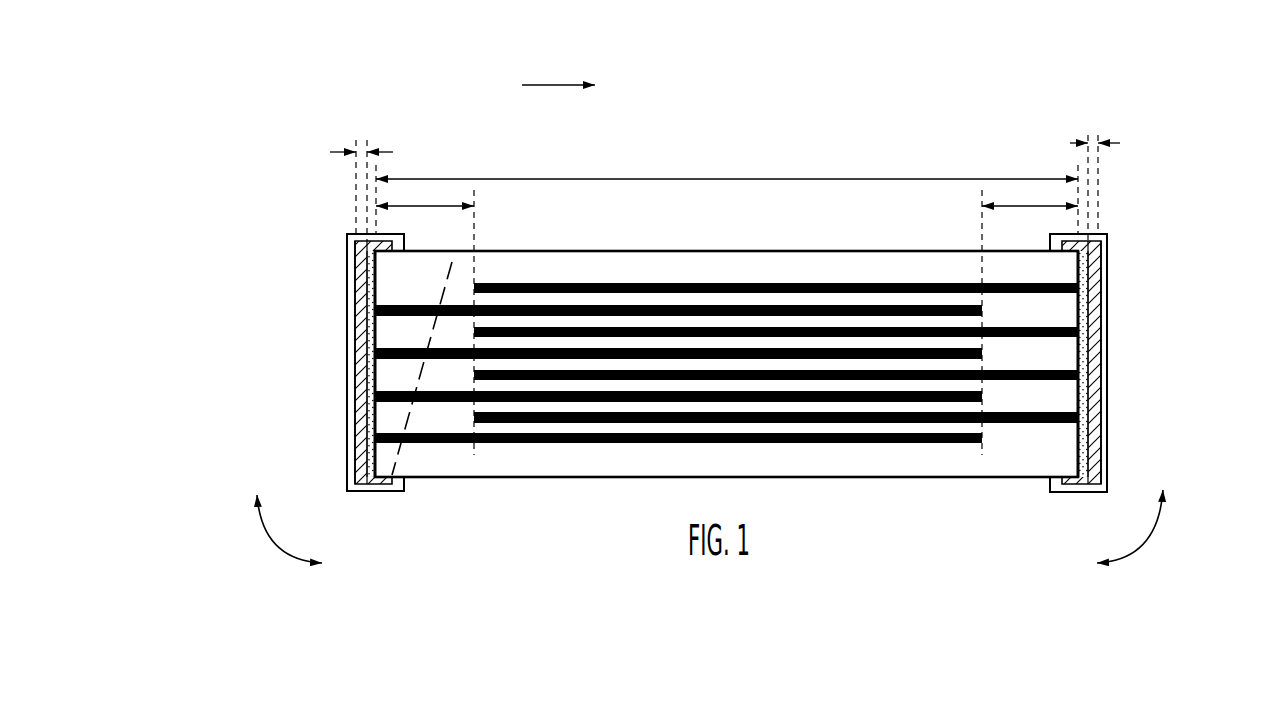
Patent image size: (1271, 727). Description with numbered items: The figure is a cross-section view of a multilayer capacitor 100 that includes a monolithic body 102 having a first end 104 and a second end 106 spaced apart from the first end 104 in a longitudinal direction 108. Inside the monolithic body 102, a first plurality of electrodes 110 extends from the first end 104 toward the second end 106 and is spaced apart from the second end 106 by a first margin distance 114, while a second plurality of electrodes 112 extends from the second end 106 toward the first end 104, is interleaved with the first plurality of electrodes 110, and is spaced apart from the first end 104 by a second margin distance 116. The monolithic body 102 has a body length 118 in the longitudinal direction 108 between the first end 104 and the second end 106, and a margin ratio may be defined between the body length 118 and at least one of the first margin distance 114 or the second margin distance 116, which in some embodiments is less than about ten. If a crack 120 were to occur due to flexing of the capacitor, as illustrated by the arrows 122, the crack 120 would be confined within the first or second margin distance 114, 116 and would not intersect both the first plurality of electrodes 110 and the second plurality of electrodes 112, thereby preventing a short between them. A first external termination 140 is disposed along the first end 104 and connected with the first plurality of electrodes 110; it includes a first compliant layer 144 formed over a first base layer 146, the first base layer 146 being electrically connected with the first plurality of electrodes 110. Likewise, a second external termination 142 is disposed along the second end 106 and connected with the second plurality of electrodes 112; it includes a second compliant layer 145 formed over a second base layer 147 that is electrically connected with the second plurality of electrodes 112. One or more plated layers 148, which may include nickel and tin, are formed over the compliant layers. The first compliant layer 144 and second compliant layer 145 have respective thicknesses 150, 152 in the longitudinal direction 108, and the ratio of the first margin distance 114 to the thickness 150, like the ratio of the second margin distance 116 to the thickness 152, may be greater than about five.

The multilayer capacitor 100 is at (267, 132).
The monolithic body 102 is at (633, 250).
The first end 104 is at (373, 277).
The second end 106 is at (1082, 270).
The longitudinal direction 108 is at (543, 85).
The first plurality of electrodes 110 is at (377, 311).
The second plurality of electrodes 112 is at (1080, 287).
The first margin distance 114 is at (427, 206).
The second margin distance 116 is at (1027, 205).
The body length 118 is at (670, 179).
The crack 120 is at (445, 283).
The arrows 122 is at (260, 542).
The first external termination 140 is at (347, 322).
The second external termination 142 is at (1108, 232).
The first compliant layer 144 is at (357, 437).
The second compliant layer 145 is at (1099, 437).
The first base layer 146 is at (368, 448).
The second base layer 147 is at (1090, 450).
The plated layers 148 is at (347, 457).
The thickness of the first compliant layer 150 is at (332, 152).
The thickness of the second compliant layer 152 is at (1070, 143).